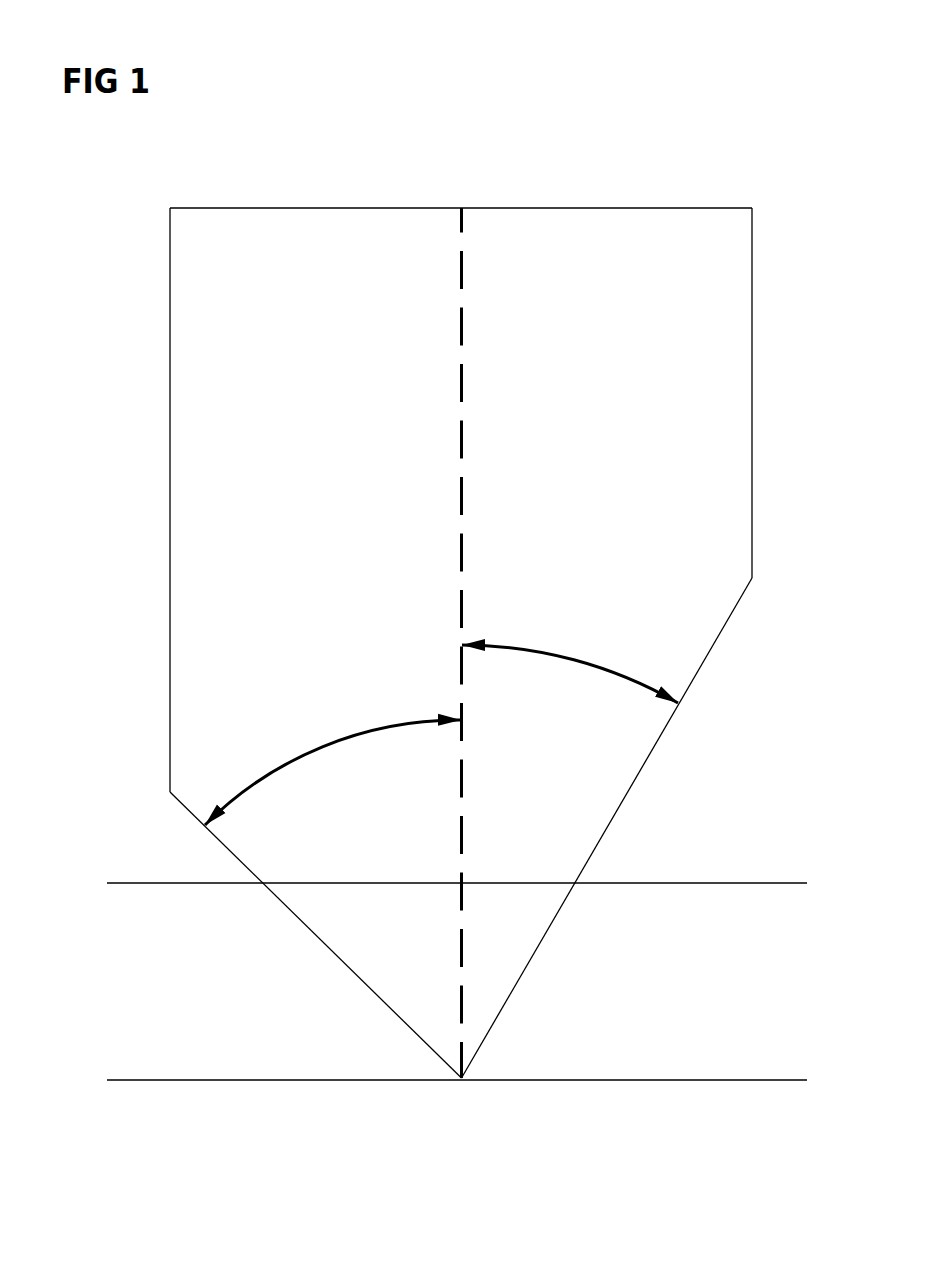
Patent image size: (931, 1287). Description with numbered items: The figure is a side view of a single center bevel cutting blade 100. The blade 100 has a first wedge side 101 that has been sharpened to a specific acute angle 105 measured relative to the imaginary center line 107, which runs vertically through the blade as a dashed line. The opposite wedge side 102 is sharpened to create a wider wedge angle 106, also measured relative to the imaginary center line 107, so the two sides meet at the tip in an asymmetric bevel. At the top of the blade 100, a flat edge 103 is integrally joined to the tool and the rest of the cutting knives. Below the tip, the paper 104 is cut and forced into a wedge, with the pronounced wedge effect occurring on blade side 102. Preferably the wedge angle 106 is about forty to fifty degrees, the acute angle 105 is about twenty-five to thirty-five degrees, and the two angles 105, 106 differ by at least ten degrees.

The blade 100 is at (155, 347).
The first wedge side 101 is at (642, 767).
The wedge side 102 is at (392, 1012).
The flat edge 103 is at (560, 208).
The paper 104 is at (663, 1082).
The acute angle 105 is at (570, 665).
The wedge angle 106 is at (333, 770).
The imaginary center line 107 is at (483, 643).